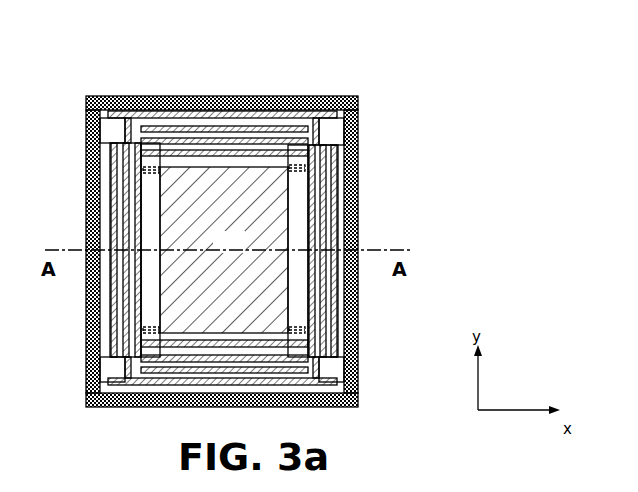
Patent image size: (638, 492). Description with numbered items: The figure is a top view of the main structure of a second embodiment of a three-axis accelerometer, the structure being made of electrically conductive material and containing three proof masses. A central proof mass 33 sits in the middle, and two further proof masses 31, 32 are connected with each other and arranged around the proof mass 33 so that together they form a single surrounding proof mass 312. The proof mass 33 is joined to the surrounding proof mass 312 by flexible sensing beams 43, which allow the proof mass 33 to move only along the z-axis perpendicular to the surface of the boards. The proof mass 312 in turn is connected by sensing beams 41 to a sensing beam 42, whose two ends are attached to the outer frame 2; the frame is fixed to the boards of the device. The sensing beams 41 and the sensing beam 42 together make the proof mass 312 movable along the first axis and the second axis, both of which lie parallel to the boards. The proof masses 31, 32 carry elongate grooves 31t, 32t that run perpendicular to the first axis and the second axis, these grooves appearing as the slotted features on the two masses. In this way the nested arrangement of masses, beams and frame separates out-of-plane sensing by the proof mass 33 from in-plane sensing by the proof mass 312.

The frame 2 is at (358, 170).
The sensing beam 42 is at (112, 112).
The sensing beams 41 is at (138, 118).
The proof mass 32 is at (196, 111).
The elongate grooves 32t is at (247, 154).
The proof mass 31 is at (113, 178).
The proof mass 312 is at (336, 207).
The flexible sensing beams 43 is at (150, 173).
The elongate grooves 31t is at (310, 329).
The proof mass 33 is at (224, 250).